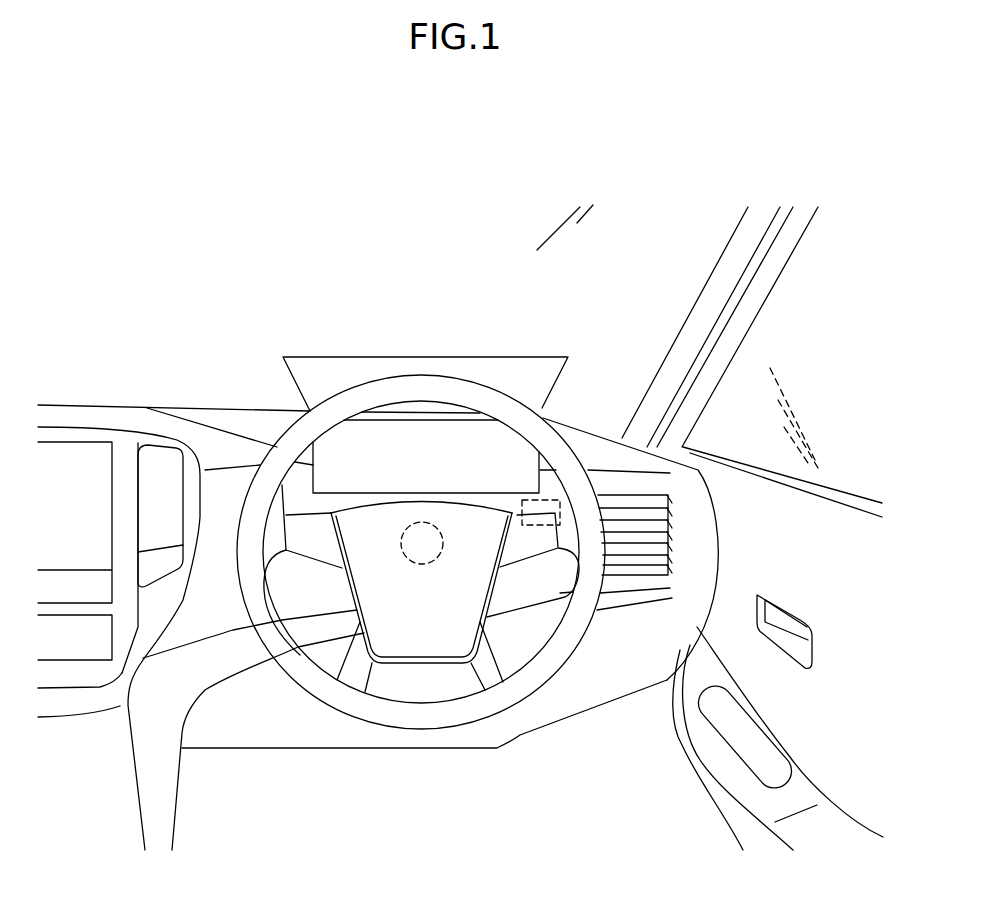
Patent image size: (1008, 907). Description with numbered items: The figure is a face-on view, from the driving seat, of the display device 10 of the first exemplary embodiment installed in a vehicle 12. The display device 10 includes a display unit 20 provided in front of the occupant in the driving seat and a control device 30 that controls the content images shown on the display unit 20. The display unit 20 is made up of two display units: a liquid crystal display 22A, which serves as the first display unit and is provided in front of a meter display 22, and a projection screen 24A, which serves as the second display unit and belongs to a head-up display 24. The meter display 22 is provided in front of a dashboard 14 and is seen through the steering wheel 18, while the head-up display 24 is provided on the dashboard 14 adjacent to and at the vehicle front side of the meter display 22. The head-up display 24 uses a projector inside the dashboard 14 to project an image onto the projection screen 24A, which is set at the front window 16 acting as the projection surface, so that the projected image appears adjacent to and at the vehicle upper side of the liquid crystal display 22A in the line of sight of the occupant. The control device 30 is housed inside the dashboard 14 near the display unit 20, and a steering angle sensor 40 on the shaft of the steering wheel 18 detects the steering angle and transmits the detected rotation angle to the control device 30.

The display device 10 is at (624, 324).
The vehicle 12 is at (558, 201).
The dashboard 14 is at (239, 418).
The front window 16 is at (603, 382).
The steering wheel 18 is at (518, 690).
The display unit 20 is at (441, 336).
The meter display 22 is at (384, 632).
The liquid crystal display 22A is at (370, 462).
The head-up display 24 is at (364, 354).
The projection screen 24A is at (455, 369).
The control device 30 is at (560, 498).
The steering angle sensor 40 is at (428, 563).